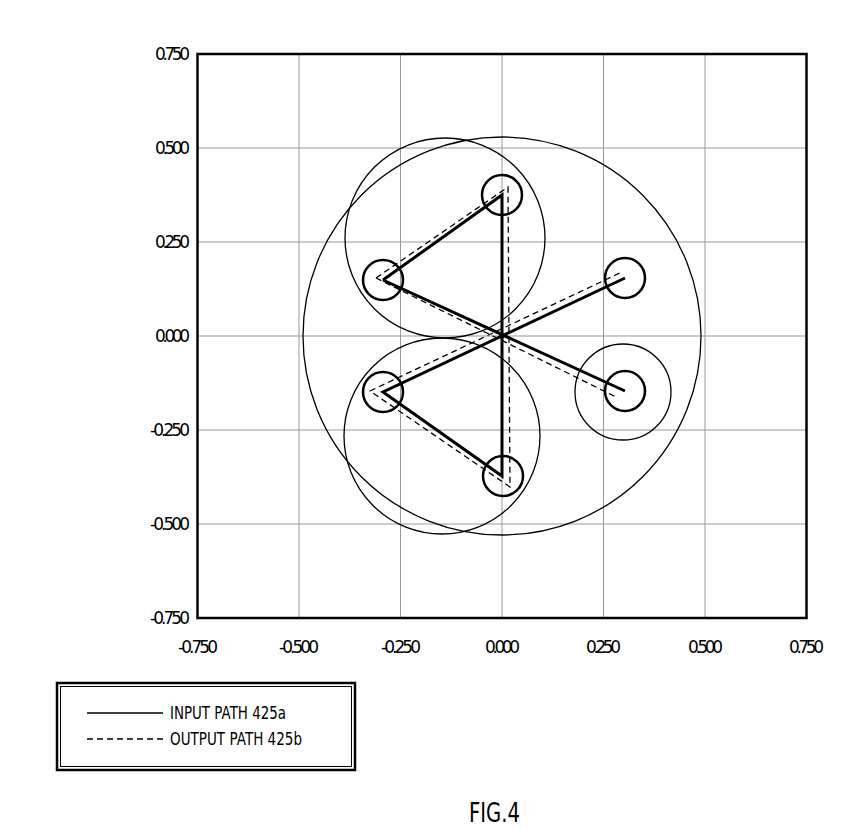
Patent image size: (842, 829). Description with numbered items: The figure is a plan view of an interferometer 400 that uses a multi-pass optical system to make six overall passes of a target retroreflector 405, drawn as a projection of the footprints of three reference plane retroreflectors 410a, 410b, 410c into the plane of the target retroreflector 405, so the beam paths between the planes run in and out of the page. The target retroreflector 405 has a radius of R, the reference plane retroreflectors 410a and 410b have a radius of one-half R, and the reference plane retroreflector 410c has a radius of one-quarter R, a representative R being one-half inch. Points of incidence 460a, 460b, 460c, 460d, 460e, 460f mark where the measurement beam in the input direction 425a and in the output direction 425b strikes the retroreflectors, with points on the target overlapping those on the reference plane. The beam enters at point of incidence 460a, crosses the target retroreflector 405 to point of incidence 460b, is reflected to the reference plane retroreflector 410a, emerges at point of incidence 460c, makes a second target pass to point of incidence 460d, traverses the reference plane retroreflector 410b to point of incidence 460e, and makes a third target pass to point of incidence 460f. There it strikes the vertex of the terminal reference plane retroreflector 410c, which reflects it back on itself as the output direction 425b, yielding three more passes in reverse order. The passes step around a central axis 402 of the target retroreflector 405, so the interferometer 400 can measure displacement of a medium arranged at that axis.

The interferometer 400 is at (50, 44).
The central axis 402 is at (502, 338).
The target retroreflector 405 is at (652, 204).
The reference plane retroreflector 410a is at (350, 474).
The reference plane retroreflector 410b is at (358, 196).
The reference plane retroreflector 410c is at (672, 392).
The input direction 425a is at (551, 314).
The output direction 425b is at (552, 367).
The point of incidence 460a is at (645, 278).
The point of incidence 460b is at (364, 396).
The point of incidence 460c is at (524, 472).
The point of incidence 460d is at (483, 197).
The point of incidence 460e is at (381, 260).
The point of incidence 460f is at (621, 412).